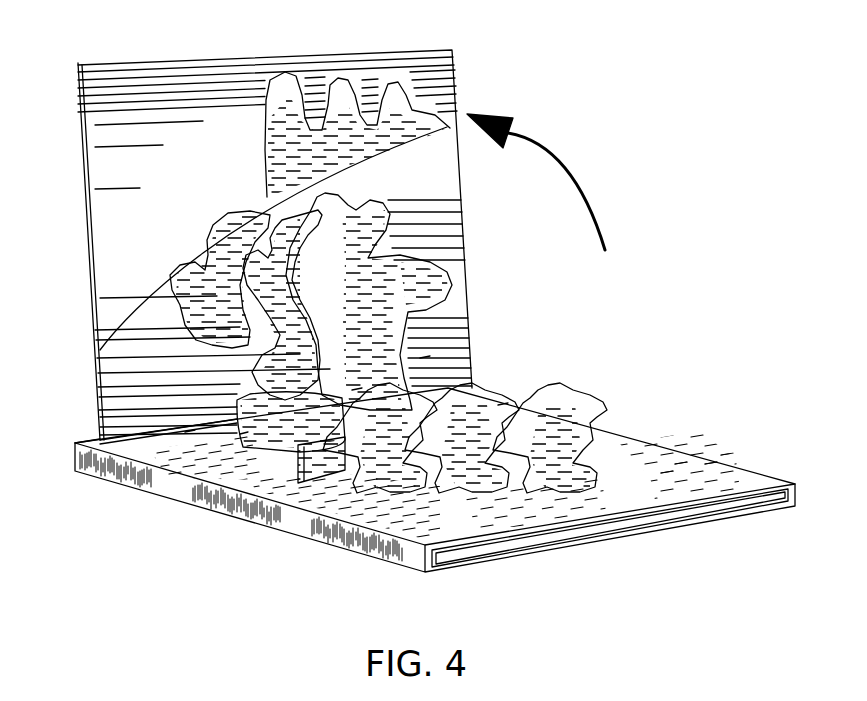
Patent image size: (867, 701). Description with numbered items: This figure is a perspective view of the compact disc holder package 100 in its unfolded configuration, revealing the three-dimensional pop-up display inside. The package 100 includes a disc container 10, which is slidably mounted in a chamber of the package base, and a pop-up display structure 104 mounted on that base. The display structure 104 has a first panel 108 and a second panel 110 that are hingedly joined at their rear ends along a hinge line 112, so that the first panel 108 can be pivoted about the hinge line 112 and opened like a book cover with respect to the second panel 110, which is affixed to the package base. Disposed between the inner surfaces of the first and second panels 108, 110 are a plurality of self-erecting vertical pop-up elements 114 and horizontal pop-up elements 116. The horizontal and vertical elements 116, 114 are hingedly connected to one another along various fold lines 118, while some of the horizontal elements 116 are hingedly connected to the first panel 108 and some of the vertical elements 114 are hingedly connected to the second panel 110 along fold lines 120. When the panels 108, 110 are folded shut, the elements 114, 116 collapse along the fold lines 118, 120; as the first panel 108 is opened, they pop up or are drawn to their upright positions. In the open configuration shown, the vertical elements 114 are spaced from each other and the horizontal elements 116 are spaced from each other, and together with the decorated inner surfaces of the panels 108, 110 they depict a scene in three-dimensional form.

The disc container 10 is at (697, 495).
The compact disc holder package 100 is at (217, 617).
The pop-up display structure 104 is at (487, 366).
The first panel 108 is at (445, 97).
The second panel 110 is at (700, 465).
The hinge line 112 is at (142, 440).
The vertical pop-up elements 114 is at (333, 207).
The horizontal pop-up elements 116 is at (240, 352).
The fold lines 118 is at (190, 430).
The fold lines 120 is at (215, 355).